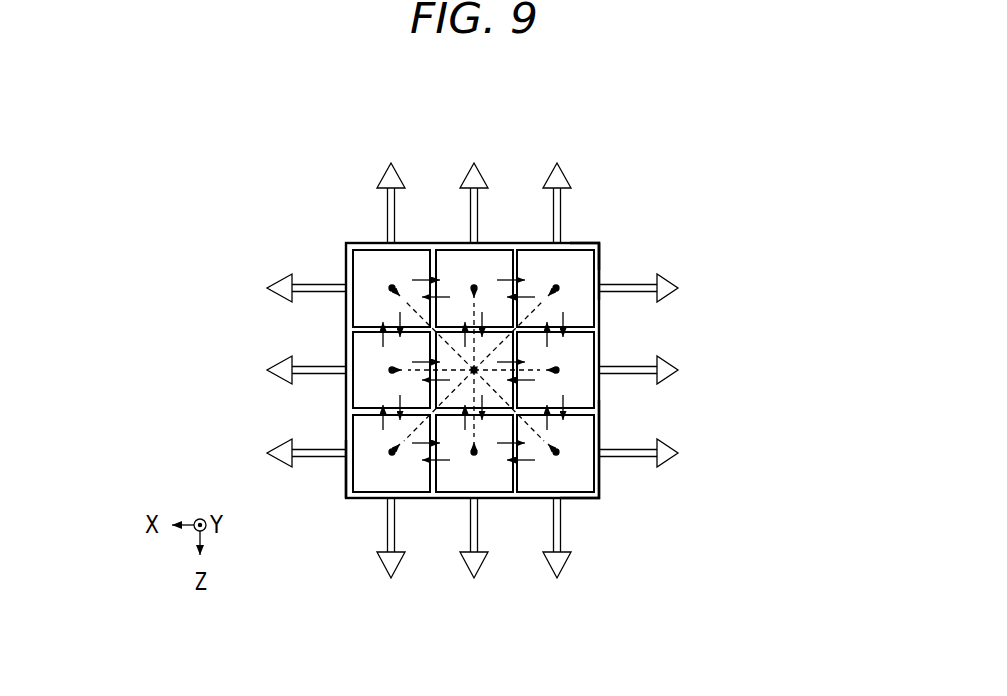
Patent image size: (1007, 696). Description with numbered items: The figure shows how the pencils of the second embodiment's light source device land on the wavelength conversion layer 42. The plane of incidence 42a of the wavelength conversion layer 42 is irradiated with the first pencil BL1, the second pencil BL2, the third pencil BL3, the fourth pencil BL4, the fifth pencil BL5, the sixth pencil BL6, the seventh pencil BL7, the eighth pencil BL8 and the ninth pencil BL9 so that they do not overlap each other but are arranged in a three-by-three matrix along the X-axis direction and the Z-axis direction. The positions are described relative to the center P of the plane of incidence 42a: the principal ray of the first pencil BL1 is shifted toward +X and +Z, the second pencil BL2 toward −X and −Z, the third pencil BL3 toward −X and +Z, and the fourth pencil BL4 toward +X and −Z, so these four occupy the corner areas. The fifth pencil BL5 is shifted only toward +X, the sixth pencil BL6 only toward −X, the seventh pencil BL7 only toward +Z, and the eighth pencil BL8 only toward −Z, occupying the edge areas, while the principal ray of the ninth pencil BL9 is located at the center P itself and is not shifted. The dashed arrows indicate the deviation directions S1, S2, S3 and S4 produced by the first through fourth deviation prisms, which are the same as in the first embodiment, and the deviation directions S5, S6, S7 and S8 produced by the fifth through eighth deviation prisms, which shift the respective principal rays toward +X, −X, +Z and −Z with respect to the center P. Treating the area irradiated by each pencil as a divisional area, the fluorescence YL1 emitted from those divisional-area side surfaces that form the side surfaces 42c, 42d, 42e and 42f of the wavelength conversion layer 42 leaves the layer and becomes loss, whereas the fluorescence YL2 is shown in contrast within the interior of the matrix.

The wavelength conversion layer 42 is at (428, 166).
The plane of incidence 42a is at (600, 435).
The side surface 42c is at (599, 243).
The side surface 42d is at (589, 500).
The side surface 42e is at (344, 490).
The side surface 42f is at (602, 257).
The first pencil BL1 is at (365, 502).
The second pencil BL2 is at (582, 243).
The third pencil BL3 is at (575, 499).
The fourth pencil BL4 is at (363, 242).
The fifth pencil BL5 is at (346, 340).
The sixth pencil BL6 is at (600, 340).
The seventh pencil BL7 is at (443, 502).
The eighth pencil BL8 is at (507, 242).
The ninth pencil BL9 is at (430, 385).
The fluorescence YL1 is at (554, 200).
The fluorescence YL2 is at (383, 322).
The deviation direction S1 is at (404, 443).
The deviation direction S2 is at (545, 299).
The deviation direction S3 is at (545, 443).
The deviation direction S4 is at (404, 299).
The deviation direction S5 is at (414, 370).
The deviation direction S6 is at (534, 370).
The deviation direction S7 is at (476, 440).
The deviation direction S8 is at (473, 303).
The center of the plane of incidence P is at (478, 372).